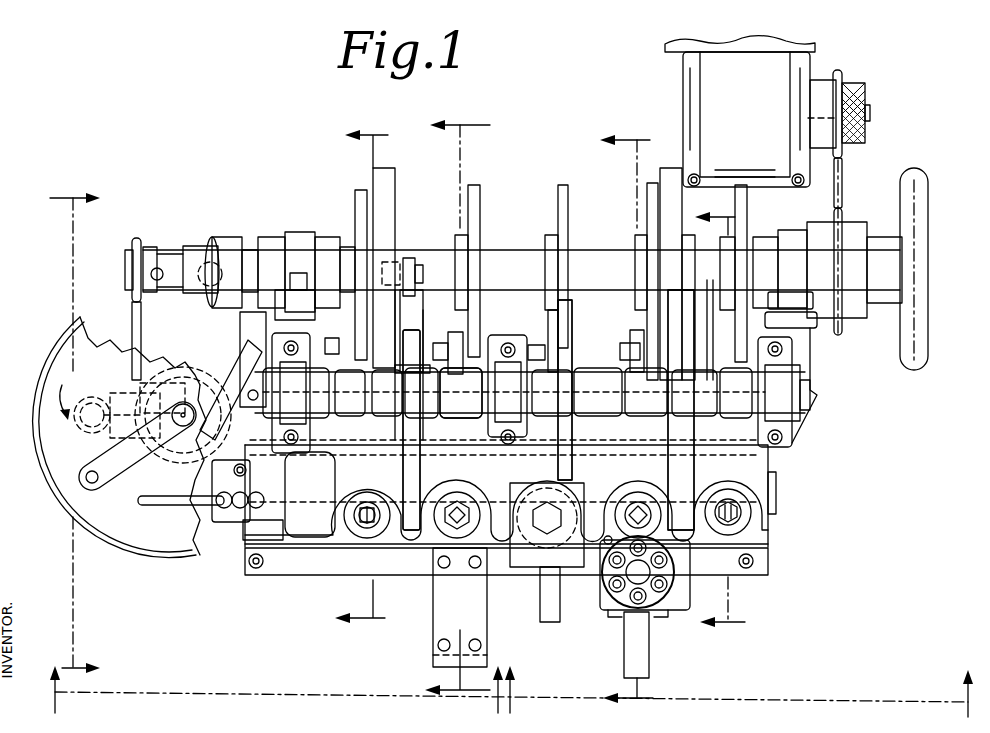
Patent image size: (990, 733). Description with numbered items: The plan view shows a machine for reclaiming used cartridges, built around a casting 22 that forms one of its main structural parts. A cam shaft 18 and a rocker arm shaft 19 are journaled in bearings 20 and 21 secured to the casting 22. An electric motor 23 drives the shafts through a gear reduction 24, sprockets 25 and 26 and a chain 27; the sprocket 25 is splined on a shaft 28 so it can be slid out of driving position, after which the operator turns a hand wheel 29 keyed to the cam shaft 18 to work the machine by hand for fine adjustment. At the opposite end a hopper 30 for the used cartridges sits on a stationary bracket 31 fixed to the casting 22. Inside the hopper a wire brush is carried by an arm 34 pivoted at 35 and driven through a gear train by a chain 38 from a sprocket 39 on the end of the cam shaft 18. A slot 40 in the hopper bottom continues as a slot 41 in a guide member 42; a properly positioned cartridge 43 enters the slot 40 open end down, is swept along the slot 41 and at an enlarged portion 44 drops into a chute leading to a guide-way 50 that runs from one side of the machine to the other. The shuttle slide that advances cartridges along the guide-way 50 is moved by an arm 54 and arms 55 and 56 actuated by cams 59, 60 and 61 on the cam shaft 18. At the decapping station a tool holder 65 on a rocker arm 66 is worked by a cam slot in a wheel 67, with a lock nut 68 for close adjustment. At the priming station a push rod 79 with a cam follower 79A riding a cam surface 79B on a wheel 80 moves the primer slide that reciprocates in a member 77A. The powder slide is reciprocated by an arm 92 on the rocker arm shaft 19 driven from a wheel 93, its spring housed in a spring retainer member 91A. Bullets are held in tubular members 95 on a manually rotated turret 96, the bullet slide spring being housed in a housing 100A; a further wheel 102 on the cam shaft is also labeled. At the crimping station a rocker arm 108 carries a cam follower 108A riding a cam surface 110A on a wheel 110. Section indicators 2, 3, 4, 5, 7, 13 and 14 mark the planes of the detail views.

The section line 2- 2 is at (268, 691).
The section line 3- 3 is at (746, 691).
The section line 4- 4 is at (75, 433).
The section line 5- 5 is at (361, 375).
The section line 7- 7 is at (457, 404).
The section line 13- 13 is at (626, 420).
The section line 14- 14 is at (720, 418).
The cam shaft 18 is at (592, 248).
The rocker arm shaft 19 is at (582, 372).
The bearing 20 is at (300, 240).
The bearing 21 is at (290, 395).
The casting 22 is at (242, 326).
The electric motor 23 is at (705, 76).
The gear reduction 24 is at (816, 96).
The sprocket 25 is at (840, 73).
The sprocket 26 is at (843, 216).
The chain 27 is at (845, 177).
The shaft 28 is at (868, 111).
The hand wheel 29 is at (930, 206).
The hopper 30 is at (62, 342).
The stationary bracket 31 is at (216, 366).
The arm 34 is at (116, 474).
The pivot 35 is at (184, 427).
The chain 38 is at (141, 330).
The sprocket 39 is at (138, 240).
The slot 40 is at (152, 506).
The slot 41 is at (202, 536).
The guide member 42 is at (202, 478).
The properly positioned cartridge 43 is at (263, 532).
The enlarged portion 44 is at (265, 500).
The guide-way 50 is at (300, 572).
The arm 54 is at (196, 302).
The arm 55 is at (412, 475).
The arm 56 is at (680, 472).
The cam 59 is at (230, 238).
The cam 60 is at (394, 190).
The cam 61 is at (670, 168).
The tool holder 65 is at (375, 540).
The rocker arm 66 is at (348, 425).
The wheel 67 is at (356, 206).
The lock nut 68 is at (352, 532).
The slide extension member 77A is at (487, 633).
The push rod 79 is at (453, 366).
The cam follower 79A is at (484, 342).
The cam surface 79B is at (482, 335).
The wheel 80 is at (470, 323).
The spring retainer member 91A is at (540, 605).
The arm 92 is at (565, 462).
The wheel 93 is at (558, 210).
The tubular members 95 is at (616, 585).
The turret 96 is at (668, 574).
The housing 100A is at (650, 668).
The plate 102 is at (648, 196).
The rocker arm 108 is at (770, 462).
The cam follower 108A is at (732, 315).
The wheel 110 is at (748, 200).
The cam surface 110A is at (735, 304).